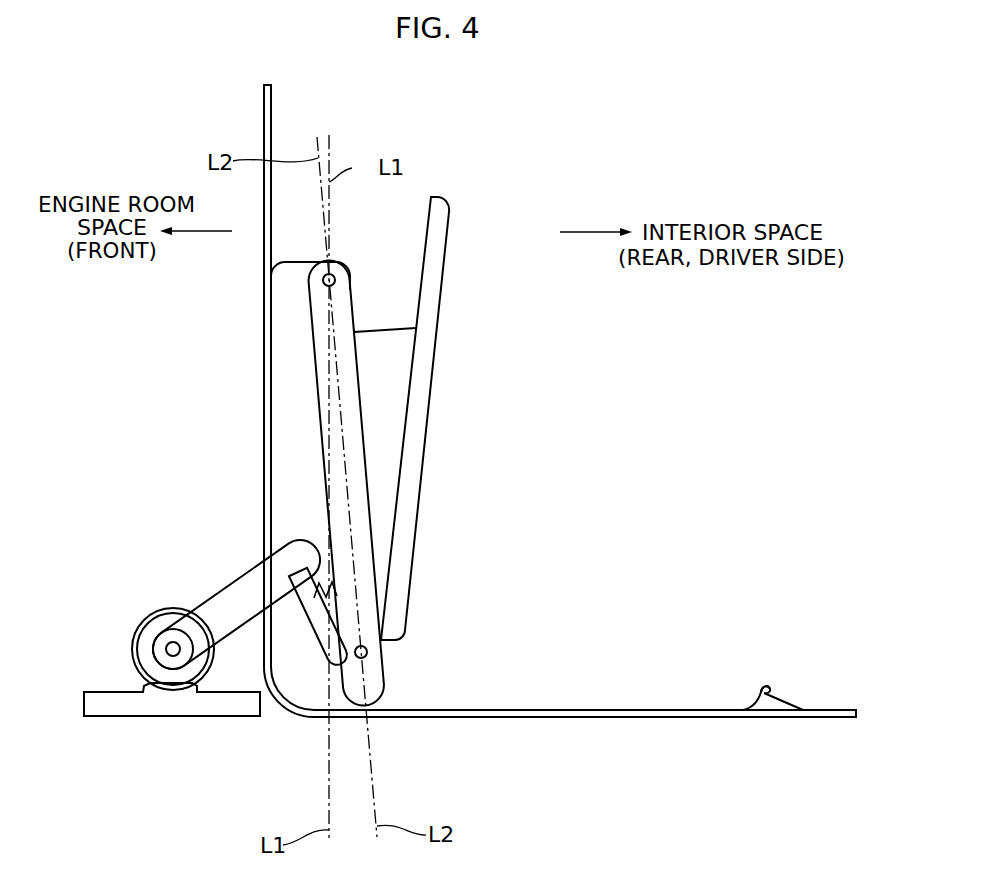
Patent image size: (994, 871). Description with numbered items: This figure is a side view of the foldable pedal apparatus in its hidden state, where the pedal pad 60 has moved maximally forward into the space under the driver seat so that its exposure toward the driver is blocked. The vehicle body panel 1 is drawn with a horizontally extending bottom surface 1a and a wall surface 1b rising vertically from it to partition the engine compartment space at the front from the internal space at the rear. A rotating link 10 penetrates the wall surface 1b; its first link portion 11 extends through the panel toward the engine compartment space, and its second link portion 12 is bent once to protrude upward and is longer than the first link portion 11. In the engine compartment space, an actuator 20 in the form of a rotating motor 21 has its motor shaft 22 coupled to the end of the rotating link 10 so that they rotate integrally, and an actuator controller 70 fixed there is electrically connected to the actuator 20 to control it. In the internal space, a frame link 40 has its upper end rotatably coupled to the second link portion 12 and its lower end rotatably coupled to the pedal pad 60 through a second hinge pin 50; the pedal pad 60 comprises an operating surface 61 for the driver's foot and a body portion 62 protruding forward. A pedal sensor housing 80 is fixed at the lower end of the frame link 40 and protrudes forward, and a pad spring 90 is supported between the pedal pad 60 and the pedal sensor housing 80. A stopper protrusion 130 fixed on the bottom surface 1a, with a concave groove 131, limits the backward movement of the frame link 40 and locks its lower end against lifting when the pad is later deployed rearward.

The vehicle body panel 1 is at (514, 450).
The bottom surface 1a is at (654, 724).
The wall surface 1b is at (264, 119).
The rotating link 10 is at (208, 591).
The first link portion 11 is at (210, 605).
The second link portion 12 is at (291, 343).
The actuator 20 is at (114, 696).
The rotating motor 21 is at (135, 630).
The motor shaft 22 is at (172, 658).
The frame link 40 is at (355, 466).
The second hinge pin 50 is at (368, 652).
The pedal pad 60 is at (445, 418).
The operating surface 61 is at (445, 270).
The body portion 62 is at (390, 413).
The actuator controller 70 is at (116, 709).
The pedal sensor housing 80 is at (318, 617).
The pad spring 90 is at (318, 582).
The stopper protrusion 130 is at (790, 655).
The concave groove 131 is at (760, 692).